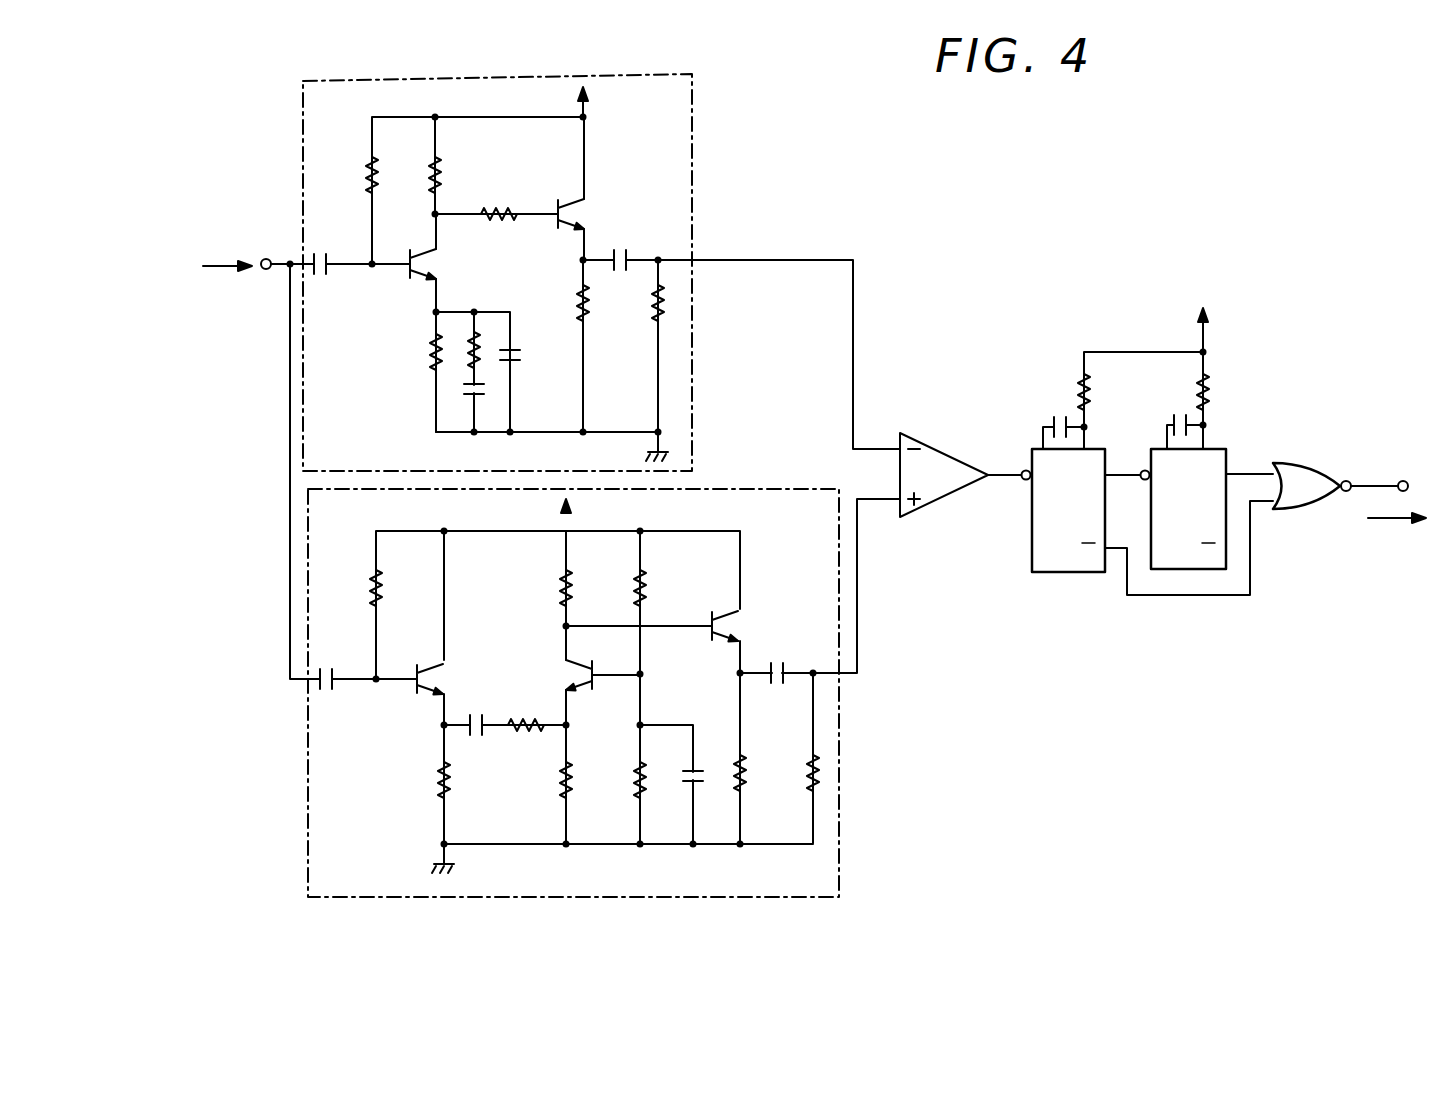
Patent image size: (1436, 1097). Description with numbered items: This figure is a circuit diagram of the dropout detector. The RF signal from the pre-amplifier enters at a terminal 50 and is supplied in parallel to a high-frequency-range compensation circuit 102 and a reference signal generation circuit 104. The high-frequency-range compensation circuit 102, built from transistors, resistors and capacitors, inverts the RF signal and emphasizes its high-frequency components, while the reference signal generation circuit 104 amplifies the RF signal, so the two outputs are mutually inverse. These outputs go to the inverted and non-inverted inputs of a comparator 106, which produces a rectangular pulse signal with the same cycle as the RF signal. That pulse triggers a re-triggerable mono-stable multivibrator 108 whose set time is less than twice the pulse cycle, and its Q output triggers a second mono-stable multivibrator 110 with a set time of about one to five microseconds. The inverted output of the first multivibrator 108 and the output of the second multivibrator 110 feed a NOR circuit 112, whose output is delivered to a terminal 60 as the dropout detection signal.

The terminal 50 is at (264, 258).
The high-frequency-range compensation circuit 102 is at (692, 113).
The reference signal generation circuit 104 is at (308, 772).
The comparator 106 is at (932, 445).
The re-triggerable mono-stable multivibrator 108 is at (1078, 574).
The second mono-stable multivibrator 110 is at (1222, 449).
The NOR circuit 112 is at (1318, 464).
The terminal 60 is at (1404, 480).